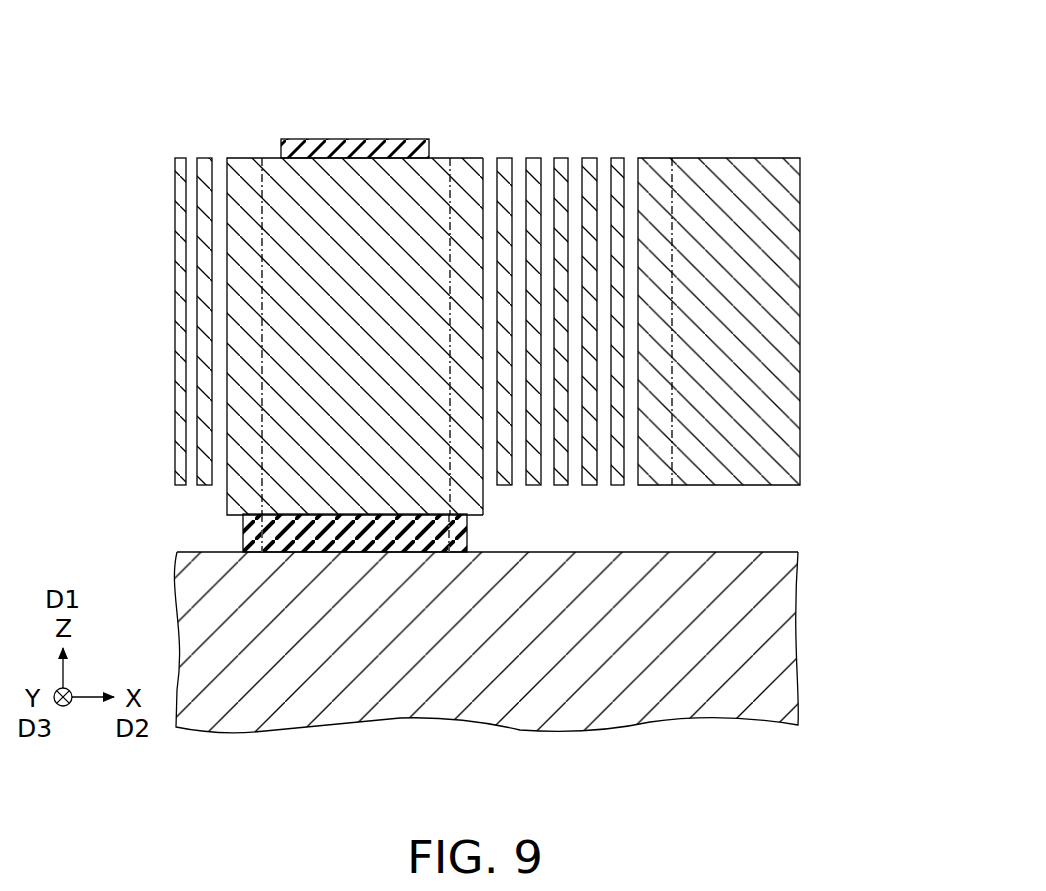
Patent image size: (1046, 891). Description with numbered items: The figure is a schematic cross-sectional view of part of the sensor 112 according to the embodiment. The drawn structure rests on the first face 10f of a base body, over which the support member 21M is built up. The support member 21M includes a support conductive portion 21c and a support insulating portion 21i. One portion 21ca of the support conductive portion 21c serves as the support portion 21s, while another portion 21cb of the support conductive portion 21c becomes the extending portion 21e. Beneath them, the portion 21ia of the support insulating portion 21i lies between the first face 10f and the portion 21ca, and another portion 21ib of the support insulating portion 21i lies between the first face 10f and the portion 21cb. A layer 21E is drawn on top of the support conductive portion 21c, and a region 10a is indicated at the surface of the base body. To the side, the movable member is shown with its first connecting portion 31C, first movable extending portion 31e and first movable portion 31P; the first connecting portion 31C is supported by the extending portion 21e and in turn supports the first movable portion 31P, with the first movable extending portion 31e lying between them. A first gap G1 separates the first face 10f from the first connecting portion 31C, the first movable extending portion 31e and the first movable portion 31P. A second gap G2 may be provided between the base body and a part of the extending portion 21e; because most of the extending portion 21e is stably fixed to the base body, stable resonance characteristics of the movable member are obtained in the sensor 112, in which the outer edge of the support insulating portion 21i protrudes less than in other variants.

The sensor 112 is at (802, 105).
The support conductive portion 21c is at (277, 203).
The portion of the support conductive portion 21ca is at (310, 203).
The another portion of the support conductive portion 21cb is at (248, 195).
The upper electrode layer 21E is at (353, 150).
The support member 21M is at (562, 97).
The support portion 21s is at (438, 172).
The extending portion 21e is at (470, 172).
The first movable extending portion 31e is at (655, 168).
The first movable portion 31P is at (740, 193).
The first connecting portion 31C is at (177, 455).
The first face 10f is at (752, 552).
The substrate 10a is at (360, 552).
The support insulating portion 21i is at (297, 538).
The portion of the support insulating portion 21ia is at (330, 538).
The another portion of the support insulating portion 21ib is at (250, 537).
The second gap G2 is at (478, 524).
The first gap G1 is at (703, 525).